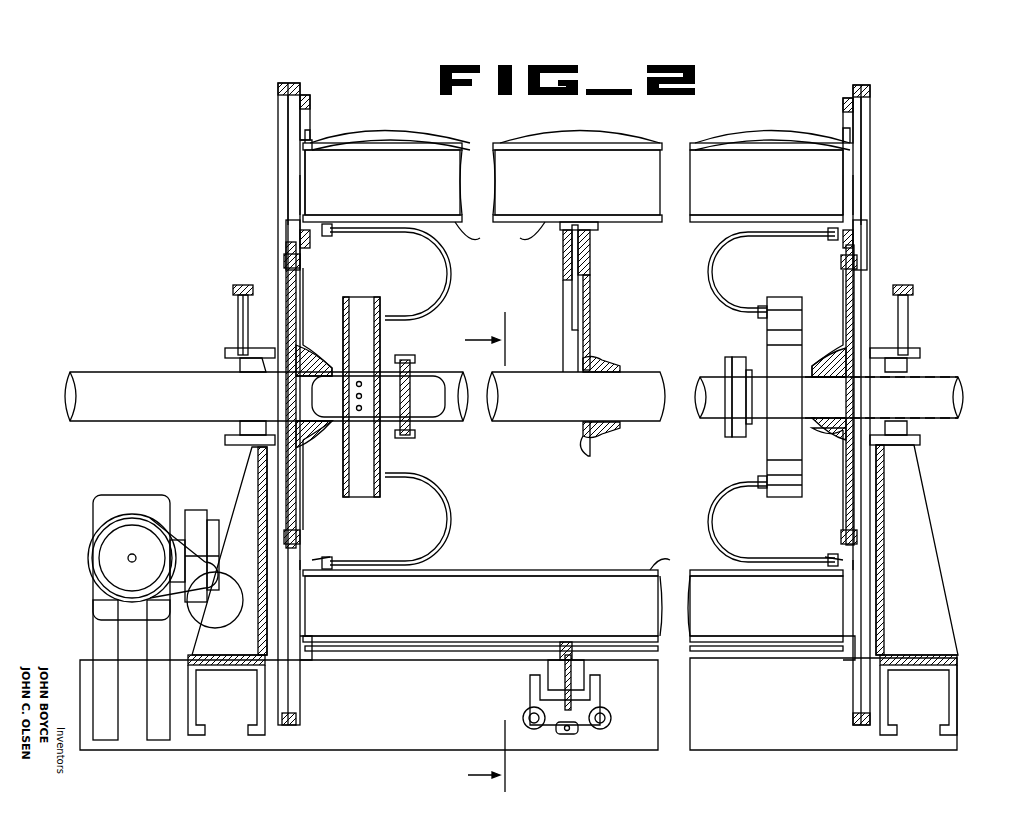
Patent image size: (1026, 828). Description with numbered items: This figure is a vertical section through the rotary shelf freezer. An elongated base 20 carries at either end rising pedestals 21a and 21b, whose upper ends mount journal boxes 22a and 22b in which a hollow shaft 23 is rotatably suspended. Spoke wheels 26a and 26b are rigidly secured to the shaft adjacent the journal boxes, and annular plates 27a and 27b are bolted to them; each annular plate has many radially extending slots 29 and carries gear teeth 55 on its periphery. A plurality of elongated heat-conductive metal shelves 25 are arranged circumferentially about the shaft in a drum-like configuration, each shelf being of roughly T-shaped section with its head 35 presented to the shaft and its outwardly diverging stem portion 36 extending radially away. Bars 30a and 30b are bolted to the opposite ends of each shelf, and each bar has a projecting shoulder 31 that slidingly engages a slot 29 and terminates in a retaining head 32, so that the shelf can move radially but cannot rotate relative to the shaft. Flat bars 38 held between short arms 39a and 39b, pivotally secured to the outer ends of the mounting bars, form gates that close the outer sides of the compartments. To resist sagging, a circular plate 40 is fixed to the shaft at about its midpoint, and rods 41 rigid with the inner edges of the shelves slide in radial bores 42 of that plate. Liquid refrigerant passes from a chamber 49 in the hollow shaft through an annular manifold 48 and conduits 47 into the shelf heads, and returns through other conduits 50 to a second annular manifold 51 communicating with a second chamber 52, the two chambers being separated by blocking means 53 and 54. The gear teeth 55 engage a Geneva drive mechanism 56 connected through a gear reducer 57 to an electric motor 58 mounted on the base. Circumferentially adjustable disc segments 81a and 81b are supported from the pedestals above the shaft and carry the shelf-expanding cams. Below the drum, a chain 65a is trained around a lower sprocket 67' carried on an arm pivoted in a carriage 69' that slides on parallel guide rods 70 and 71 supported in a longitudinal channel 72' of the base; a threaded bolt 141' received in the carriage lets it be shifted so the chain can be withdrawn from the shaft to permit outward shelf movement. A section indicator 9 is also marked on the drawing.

The base 20 is at (386, 732).
The gear teeth 55 is at (288, 83).
The annular plate 27a is at (280, 91).
The annular plate 27b is at (870, 96).
The slots 29 is at (288, 128).
The retaining head 32 is at (285, 223).
The shelves 25 is at (573, 392).
The stem portions 36 is at (436, 186).
The head 35 is at (562, 396).
The flat bars 38 is at (580, 127).
The short arm 39a is at (391, 126).
The short arm 39b is at (772, 126).
The bar 30a is at (305, 180).
The bar 30b is at (843, 190).
The shoulder 31 is at (296, 220).
The hollow shaft 23 is at (192, 378).
The chamber 49 is at (330, 400).
The blocking means 53 is at (410, 406).
The annular manifold 48 is at (372, 348).
The conduits 47 is at (449, 274).
The spoke wheel 26a is at (300, 298).
The spoke wheel 26b is at (850, 298).
The disc segment 81a is at (238, 303).
The disc segment 81b is at (908, 298).
The journal box 22a is at (258, 362).
The journal box 22b is at (912, 440).
The gear reducer 57 is at (112, 498).
The Geneva drive mechanism 56 is at (193, 491).
The electric motor 58 is at (190, 594).
The pedestal 21a is at (180, 593).
The pedestal 21b is at (917, 590).
The radial bores 42 is at (580, 250).
The rods 41 is at (578, 298).
The circular plate 40 is at (575, 346).
The section line 9 is at (555, 552).
The chamber 52 is at (915, 386).
The blocking means 54 is at (735, 380).
The second annular manifold 51 is at (770, 453).
The conduits 50 is at (708, 266).
The longitudinal channel 72' is at (574, 667).
The chain 65a is at (560, 648).
The lower sprocket 67' is at (608, 678).
The carriage 69' is at (530, 700).
The guide rod 70 is at (532, 729).
The guide rod 71 is at (602, 729).
The threaded bolt 141' is at (582, 755).